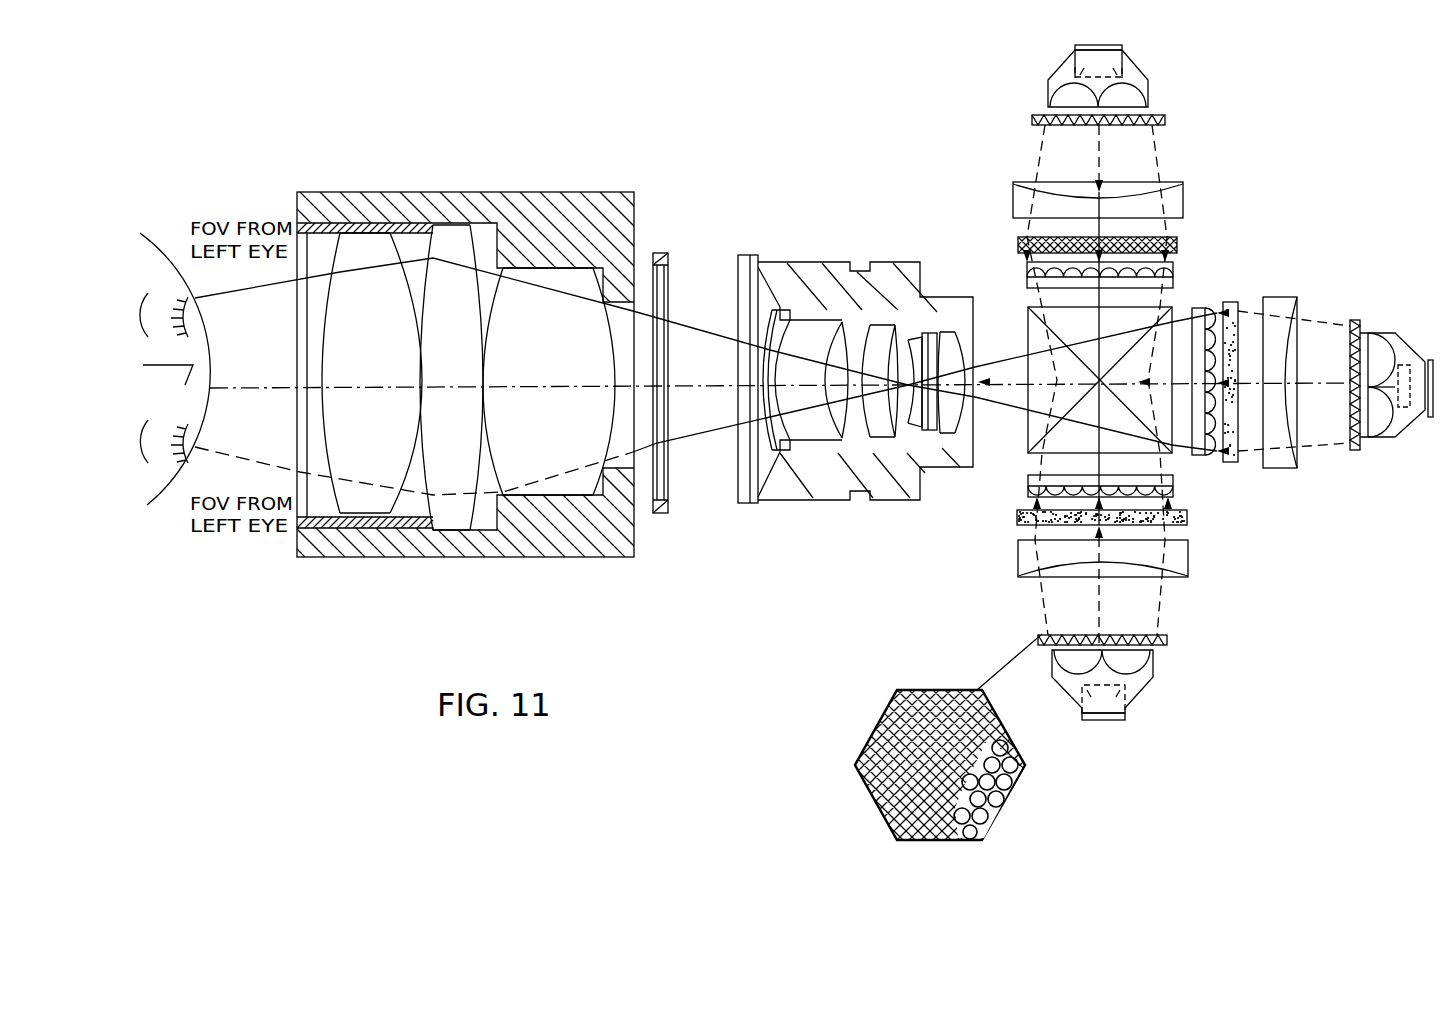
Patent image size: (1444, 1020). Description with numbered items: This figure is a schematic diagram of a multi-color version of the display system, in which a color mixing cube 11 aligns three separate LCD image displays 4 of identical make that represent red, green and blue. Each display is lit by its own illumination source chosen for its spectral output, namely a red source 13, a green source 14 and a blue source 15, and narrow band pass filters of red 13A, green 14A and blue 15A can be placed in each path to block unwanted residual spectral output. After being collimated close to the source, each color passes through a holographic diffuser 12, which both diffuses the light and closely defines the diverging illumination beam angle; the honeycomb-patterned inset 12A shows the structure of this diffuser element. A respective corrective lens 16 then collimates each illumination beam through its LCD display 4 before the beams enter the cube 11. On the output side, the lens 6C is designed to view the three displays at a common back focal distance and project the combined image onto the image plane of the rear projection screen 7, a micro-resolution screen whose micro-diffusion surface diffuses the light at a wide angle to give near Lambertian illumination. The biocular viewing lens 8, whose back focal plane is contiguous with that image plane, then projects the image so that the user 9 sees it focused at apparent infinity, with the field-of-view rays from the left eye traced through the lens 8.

The LCD image display 4 is at (1027, 270).
The lens 6C is at (862, 503).
The rear projection screen 7 is at (668, 509).
The biocular lens 8 is at (598, 560).
The user 9 is at (158, 512).
The color mixing cube 11 is at (1172, 310).
The holographic diffuser 12 is at (1165, 118).
The honeycomb diffuser 12A is at (1040, 632).
The red illumination source 13 is at (1048, 97).
The red narrow band pass filter 13A is at (1178, 245).
The green illumination source 14 is at (1410, 424).
The green narrow band pass filter 14A is at (1210, 478).
The blue illumination source 15 is at (1153, 682).
The blue narrow band pass filter 15A is at (1187, 522).
The corrective lens 16 is at (1013, 200).